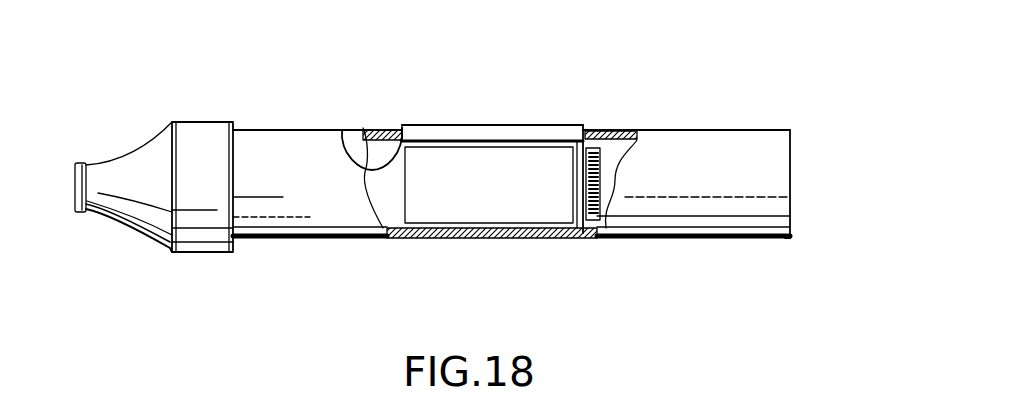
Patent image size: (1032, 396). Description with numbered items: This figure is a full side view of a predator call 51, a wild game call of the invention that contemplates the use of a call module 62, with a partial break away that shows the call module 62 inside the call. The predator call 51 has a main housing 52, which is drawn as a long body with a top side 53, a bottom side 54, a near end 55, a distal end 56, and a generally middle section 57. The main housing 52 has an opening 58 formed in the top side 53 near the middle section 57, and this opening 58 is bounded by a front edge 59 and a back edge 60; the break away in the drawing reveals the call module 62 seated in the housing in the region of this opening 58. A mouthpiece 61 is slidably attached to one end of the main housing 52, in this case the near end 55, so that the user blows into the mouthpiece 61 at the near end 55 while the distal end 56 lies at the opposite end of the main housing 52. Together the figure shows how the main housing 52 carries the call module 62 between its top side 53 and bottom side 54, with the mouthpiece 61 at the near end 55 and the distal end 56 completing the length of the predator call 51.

The predator call 51 is at (459, 178).
The main housing 52 is at (728, 223).
The top side 53 is at (667, 130).
The bottom side 54 is at (628, 239).
The near end 55 is at (245, 130).
The distal end 56 is at (790, 238).
The middle section 57 is at (585, 252).
The opening 58 is at (344, 130).
The front edge 59 is at (397, 128).
The back edge 60 is at (585, 124).
The mouthpiece 61 is at (160, 213).
The call module 62 is at (494, 124).